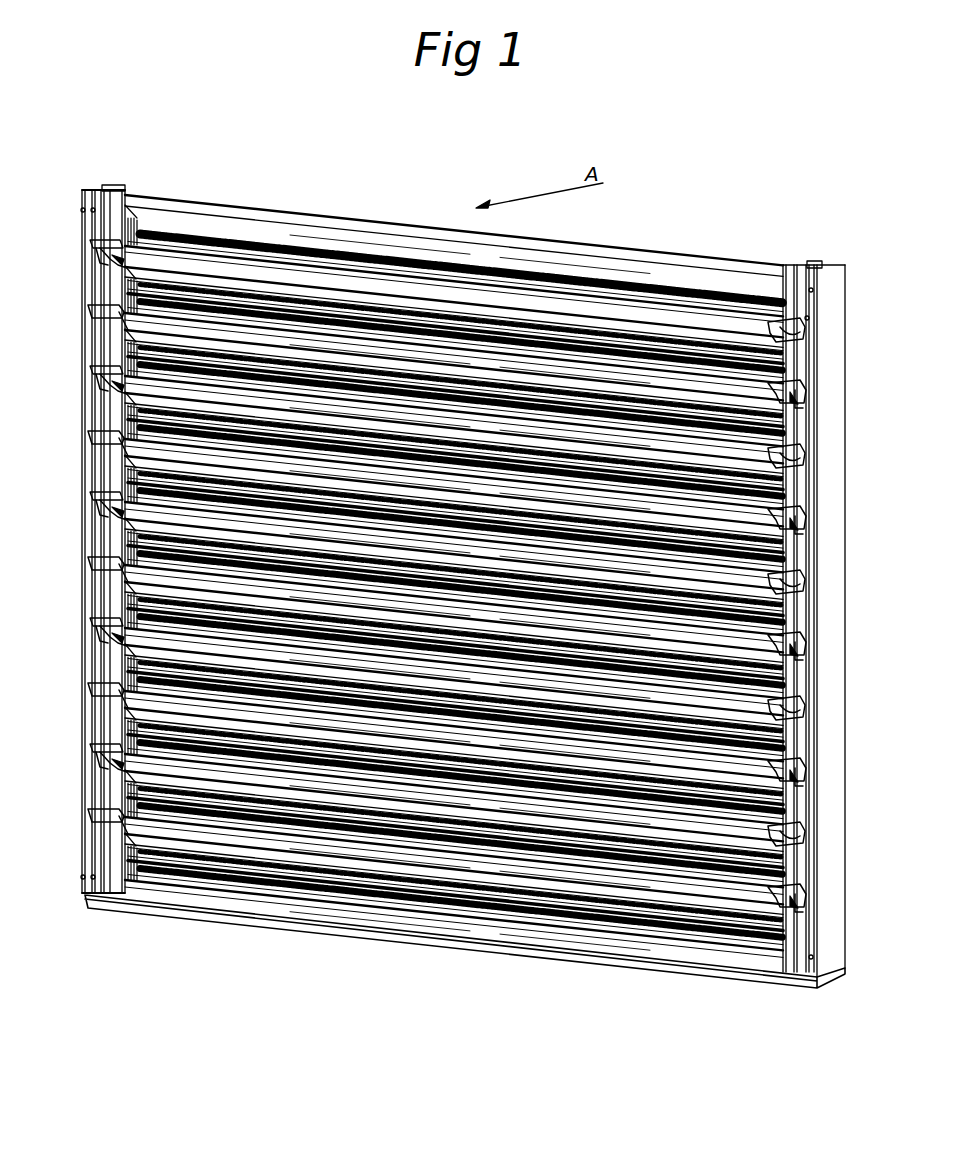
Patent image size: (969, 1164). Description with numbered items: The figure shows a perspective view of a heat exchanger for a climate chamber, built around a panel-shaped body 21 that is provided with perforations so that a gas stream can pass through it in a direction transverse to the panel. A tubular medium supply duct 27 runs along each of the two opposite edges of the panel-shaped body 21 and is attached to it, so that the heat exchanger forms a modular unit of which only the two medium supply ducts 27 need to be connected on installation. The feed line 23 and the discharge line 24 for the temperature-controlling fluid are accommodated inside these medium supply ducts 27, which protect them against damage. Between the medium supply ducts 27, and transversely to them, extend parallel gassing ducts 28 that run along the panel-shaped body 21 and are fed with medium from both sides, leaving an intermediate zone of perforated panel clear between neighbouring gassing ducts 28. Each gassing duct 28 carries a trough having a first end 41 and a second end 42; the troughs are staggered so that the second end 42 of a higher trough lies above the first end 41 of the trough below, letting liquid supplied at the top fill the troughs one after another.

The panel-shaped body 21 is at (210, 243).
The feed line 23 is at (128, 190).
The discharge line 24 is at (808, 265).
The medium supply duct 27 is at (120, 188).
The gassing duct 28 is at (640, 318).
The first end 41 is at (98, 318).
The second end 42 is at (98, 252).